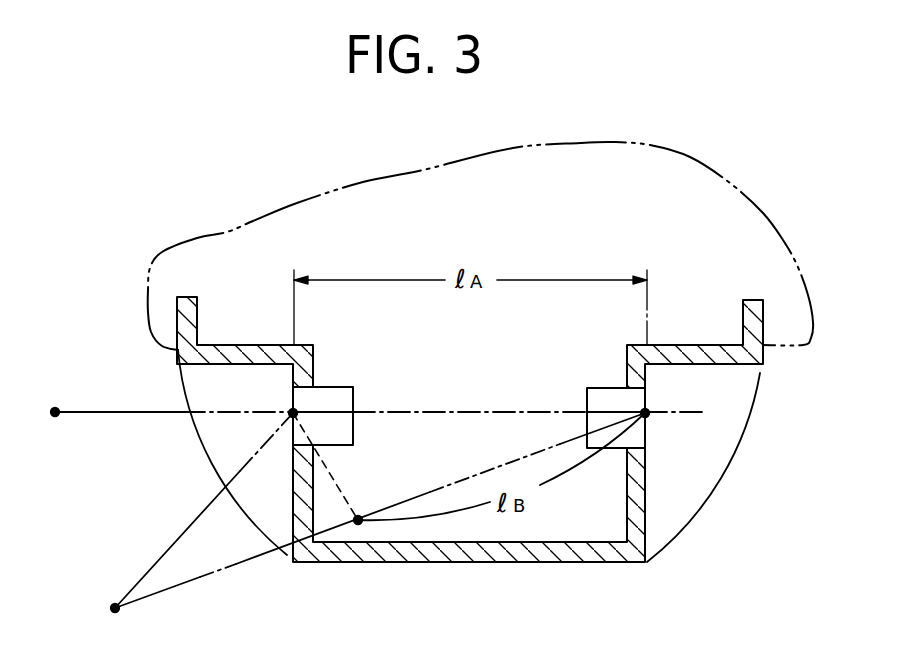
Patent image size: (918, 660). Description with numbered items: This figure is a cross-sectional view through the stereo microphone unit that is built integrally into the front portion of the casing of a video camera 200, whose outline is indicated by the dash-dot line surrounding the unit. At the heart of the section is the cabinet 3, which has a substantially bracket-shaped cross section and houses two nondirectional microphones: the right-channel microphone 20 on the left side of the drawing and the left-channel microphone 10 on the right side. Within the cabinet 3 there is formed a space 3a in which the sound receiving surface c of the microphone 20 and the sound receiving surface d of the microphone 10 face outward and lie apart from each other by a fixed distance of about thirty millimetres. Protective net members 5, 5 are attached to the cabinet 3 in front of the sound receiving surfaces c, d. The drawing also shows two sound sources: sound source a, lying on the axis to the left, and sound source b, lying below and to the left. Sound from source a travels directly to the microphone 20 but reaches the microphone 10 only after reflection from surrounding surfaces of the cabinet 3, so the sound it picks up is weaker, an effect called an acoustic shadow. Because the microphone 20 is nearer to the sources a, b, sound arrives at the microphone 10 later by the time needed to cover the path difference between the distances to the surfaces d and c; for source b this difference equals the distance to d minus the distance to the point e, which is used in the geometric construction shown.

The video camera 200 is at (705, 147).
The protective net member 5 is at (203, 457).
The cabinet 3 is at (640, 487).
The space 3a is at (507, 392).
The microphone 20 is at (369, 401).
The microphone 10 is at (648, 398).
The sound source a is at (57, 405).
The sound source b is at (115, 600).
The sound receiving surface c is at (291, 420).
The sound receiving surface d is at (650, 418).
The point e is at (360, 514).